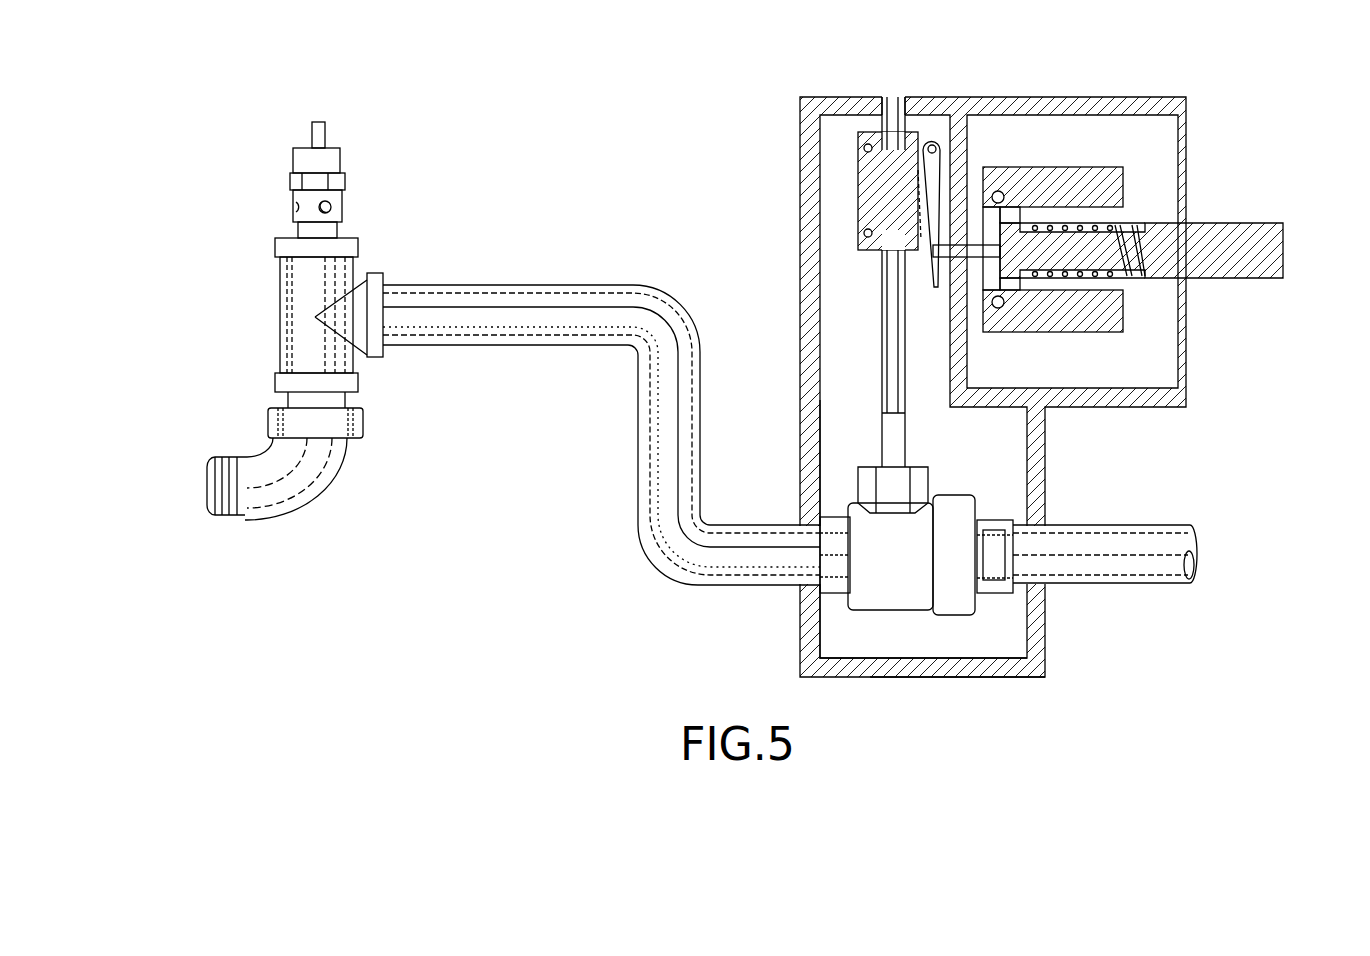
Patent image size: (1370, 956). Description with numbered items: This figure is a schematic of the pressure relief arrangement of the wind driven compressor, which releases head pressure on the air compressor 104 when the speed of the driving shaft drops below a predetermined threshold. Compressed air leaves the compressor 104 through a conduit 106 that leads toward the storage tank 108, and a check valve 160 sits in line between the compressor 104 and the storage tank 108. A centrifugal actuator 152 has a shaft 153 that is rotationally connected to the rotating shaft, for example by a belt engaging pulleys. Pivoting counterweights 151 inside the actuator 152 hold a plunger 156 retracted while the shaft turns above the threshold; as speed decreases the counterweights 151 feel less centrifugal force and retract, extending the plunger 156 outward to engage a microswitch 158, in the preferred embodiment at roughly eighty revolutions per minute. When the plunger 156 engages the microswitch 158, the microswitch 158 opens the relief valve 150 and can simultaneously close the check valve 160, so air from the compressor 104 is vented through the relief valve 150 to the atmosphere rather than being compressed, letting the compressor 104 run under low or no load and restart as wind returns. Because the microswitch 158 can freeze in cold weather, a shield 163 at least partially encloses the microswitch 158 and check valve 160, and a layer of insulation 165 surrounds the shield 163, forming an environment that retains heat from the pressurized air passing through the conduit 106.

The air compressor 104 is at (195, 485).
The conduit 106 is at (535, 284).
The storage tank 108 is at (1207, 553).
The relief valve 150 is at (858, 185).
The pivoting counterweights 151 is at (1103, 170).
The centrifugal actuator 152 is at (1010, 95).
The shaft 153 is at (1200, 233).
The plunger 156 is at (945, 262).
The microswitch 158 is at (927, 140).
The check valve 160 is at (858, 505).
The shield 163 is at (823, 660).
The layer of insulation 165 is at (943, 668).